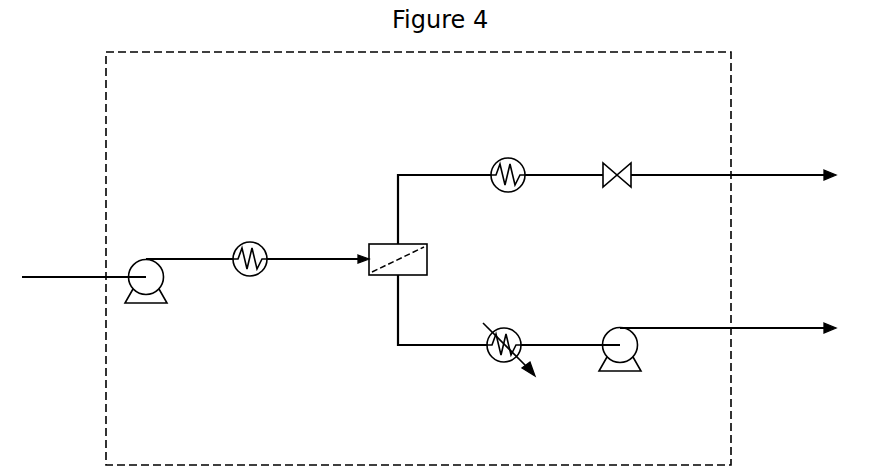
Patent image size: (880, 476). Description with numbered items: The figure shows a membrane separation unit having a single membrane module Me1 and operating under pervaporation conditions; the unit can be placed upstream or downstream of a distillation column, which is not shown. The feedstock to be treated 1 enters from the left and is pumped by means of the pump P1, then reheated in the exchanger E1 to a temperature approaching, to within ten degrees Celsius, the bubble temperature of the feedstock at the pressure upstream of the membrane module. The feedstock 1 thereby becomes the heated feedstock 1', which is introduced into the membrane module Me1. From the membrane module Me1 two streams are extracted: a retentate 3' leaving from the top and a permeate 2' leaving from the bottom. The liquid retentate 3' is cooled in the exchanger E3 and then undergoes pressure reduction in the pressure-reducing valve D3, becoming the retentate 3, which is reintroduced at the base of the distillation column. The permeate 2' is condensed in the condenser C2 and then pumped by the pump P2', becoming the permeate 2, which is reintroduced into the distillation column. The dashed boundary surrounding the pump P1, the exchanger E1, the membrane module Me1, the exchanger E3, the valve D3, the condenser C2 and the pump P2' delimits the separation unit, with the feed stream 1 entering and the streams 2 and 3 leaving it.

The feedstock to be treated 1 is at (84, 254).
The pump P1 is at (146, 267).
The exchanger E1 is at (206, 245).
The feedstock 1' is at (318, 239).
The membrane module Me1 is at (428, 256).
The retentate 3' is at (444, 187).
The exchanger E3 is at (547, 161).
The pressure-reducing valve D3 is at (615, 158).
The retentate 3 is at (733, 155).
The permeate 2' is at (442, 336).
The condenser C2 is at (551, 338).
The pump P2' is at (620, 335).
The permeate 2 is at (728, 307).